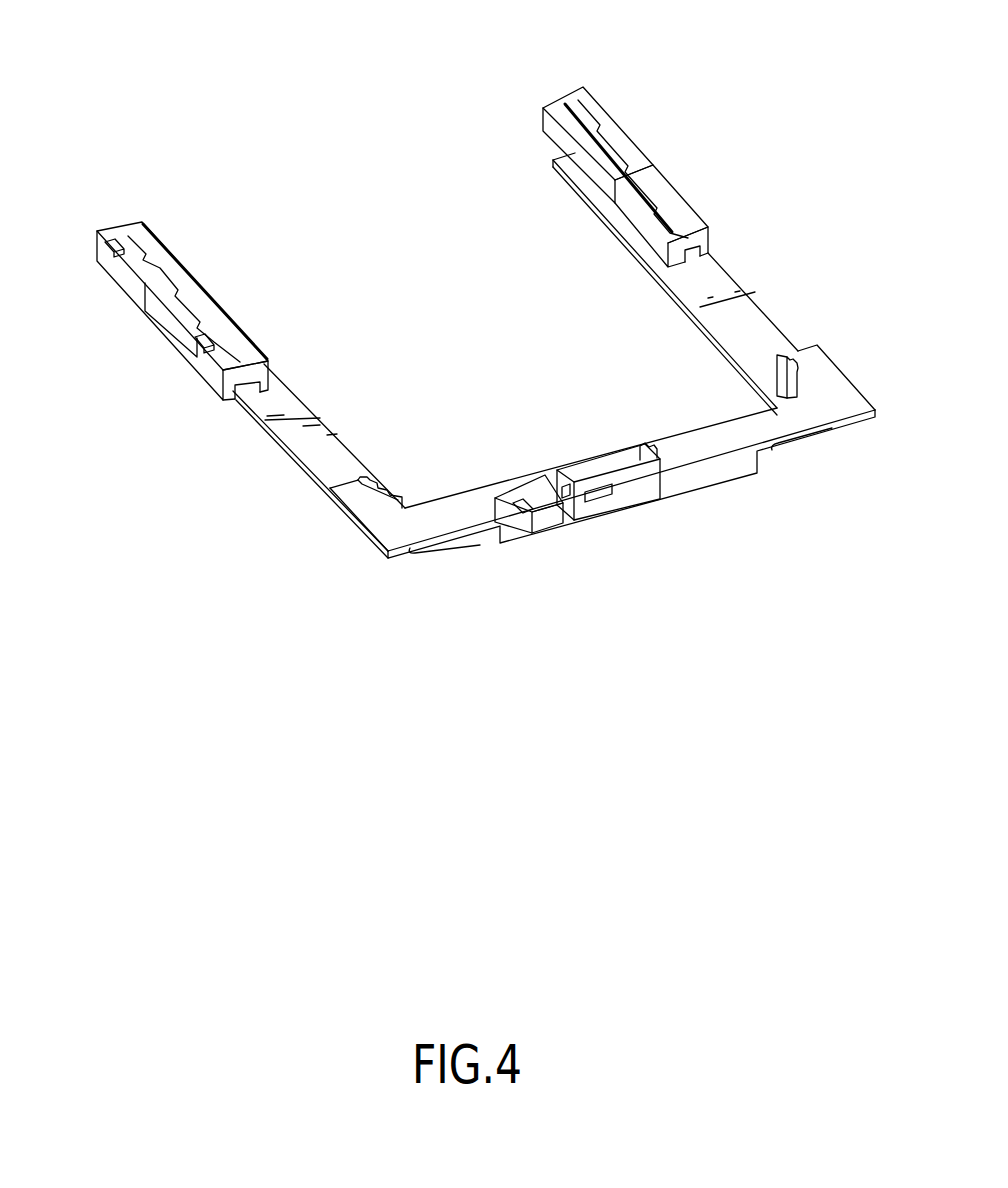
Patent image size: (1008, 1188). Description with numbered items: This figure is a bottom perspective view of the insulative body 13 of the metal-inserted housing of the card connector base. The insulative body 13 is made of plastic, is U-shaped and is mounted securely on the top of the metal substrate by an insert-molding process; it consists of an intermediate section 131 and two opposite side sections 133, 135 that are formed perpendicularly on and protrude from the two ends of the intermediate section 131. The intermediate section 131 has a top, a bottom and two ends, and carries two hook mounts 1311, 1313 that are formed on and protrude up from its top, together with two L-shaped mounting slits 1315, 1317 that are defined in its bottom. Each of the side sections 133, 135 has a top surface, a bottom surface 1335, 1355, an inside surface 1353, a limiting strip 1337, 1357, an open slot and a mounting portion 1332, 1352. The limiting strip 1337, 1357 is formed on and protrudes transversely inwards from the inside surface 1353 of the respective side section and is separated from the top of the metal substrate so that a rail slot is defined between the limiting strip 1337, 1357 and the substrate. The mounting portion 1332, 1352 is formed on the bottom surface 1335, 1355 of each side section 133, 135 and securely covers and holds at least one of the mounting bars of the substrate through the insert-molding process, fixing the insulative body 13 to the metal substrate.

The insulative body 13 is at (146, 30).
The intermediate section 131 is at (700, 508).
The hook mount 1311 is at (443, 547).
The hook mount 1313 is at (800, 440).
The mounting slit 1315 is at (513, 502).
The mounting slit 1317 is at (615, 477).
The side section 133 is at (198, 392).
The mounting portion 1332 is at (144, 236).
The bottom surface 1335 is at (172, 297).
The limiting strip 1337 is at (274, 370).
The side section 135 is at (733, 220).
The mounting portion 1352 is at (553, 106).
The inside surface 1353 is at (550, 136).
The bottom surface 1355 is at (650, 170).
The limiting strip 1357 is at (663, 264).